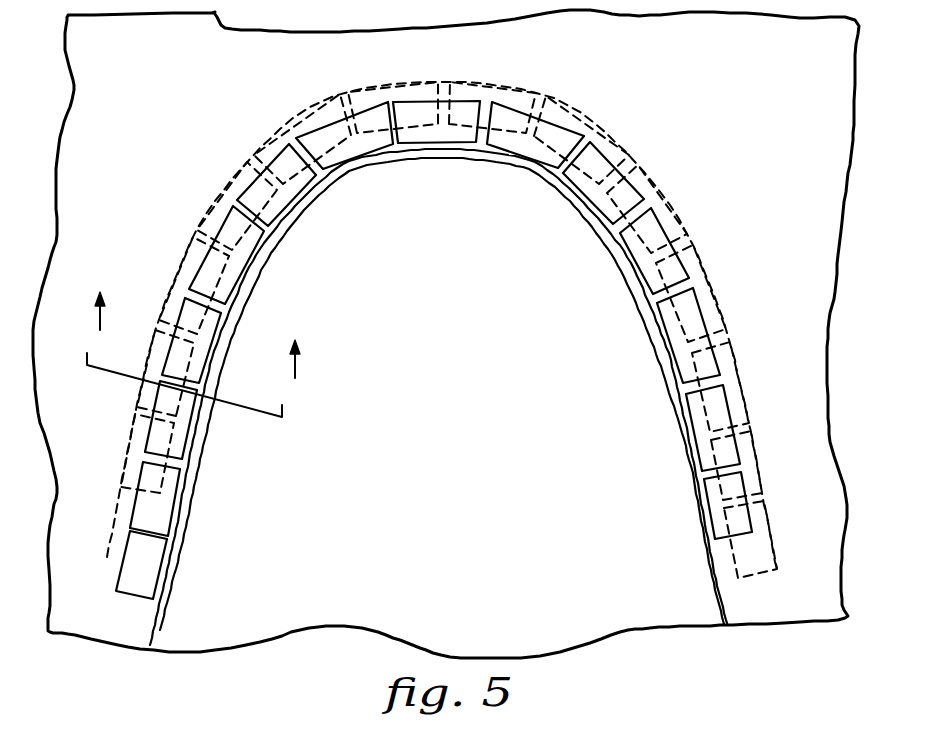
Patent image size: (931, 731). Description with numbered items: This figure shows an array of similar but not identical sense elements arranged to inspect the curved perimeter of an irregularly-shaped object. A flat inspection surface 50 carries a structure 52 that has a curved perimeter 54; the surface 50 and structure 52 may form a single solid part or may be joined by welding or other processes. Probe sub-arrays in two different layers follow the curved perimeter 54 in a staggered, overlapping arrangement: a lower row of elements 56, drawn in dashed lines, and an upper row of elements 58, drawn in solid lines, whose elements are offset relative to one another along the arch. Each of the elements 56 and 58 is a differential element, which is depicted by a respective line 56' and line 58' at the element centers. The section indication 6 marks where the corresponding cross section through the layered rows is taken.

The flat inspection surface 50 is at (808, 84).
The structure 52 is at (518, 374).
The curved perimeter 54 is at (488, 156).
The lower row of elements 56 is at (442, 313).
The line at element center 56' is at (452, 79).
The upper row of elements 58 is at (458, 350).
The line at element center 58' is at (436, 162).
The section line 6- 6 is at (191, 354).